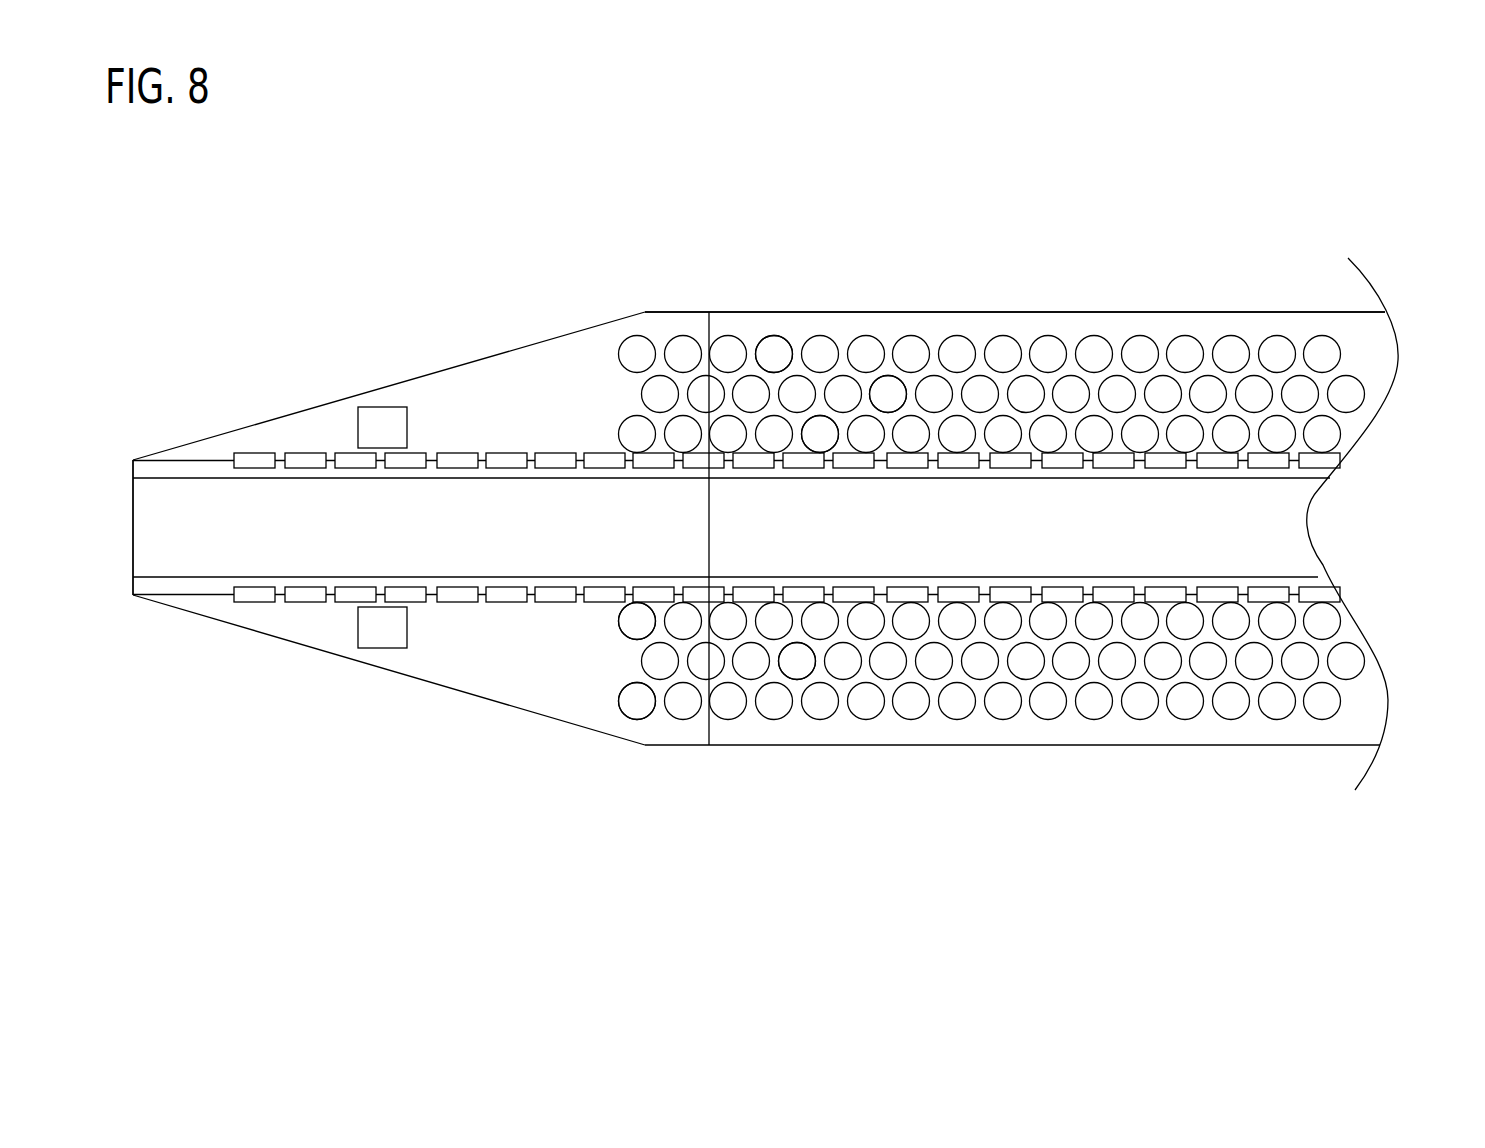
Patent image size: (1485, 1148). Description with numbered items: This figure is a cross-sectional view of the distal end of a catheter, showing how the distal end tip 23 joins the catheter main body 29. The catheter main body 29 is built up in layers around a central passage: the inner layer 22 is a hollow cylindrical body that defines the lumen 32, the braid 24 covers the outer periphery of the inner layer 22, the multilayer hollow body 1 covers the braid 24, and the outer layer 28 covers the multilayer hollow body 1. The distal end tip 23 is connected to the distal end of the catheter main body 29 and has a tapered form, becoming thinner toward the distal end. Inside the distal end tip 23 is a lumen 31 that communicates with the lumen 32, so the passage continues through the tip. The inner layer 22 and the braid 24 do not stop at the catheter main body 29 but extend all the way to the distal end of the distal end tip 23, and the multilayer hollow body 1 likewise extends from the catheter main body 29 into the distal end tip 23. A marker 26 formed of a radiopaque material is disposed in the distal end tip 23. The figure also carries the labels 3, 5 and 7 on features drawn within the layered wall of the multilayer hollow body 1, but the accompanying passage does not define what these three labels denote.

The multilayer hollow body 1 is at (1208, 730).
The optical fiber 3 is at (832, 442).
The optical fiber 5 is at (770, 347).
The optical fiber 7 is at (888, 392).
The inner layer 22 is at (432, 470).
The distal end tip 23 is at (507, 380).
The braid 24 is at (302, 455).
The marker 26 is at (380, 425).
The outer layer 28 is at (995, 323).
The catheter main body 29 is at (1155, 300).
The lumen 31 is at (190, 502).
The lumen 32 is at (1258, 540).